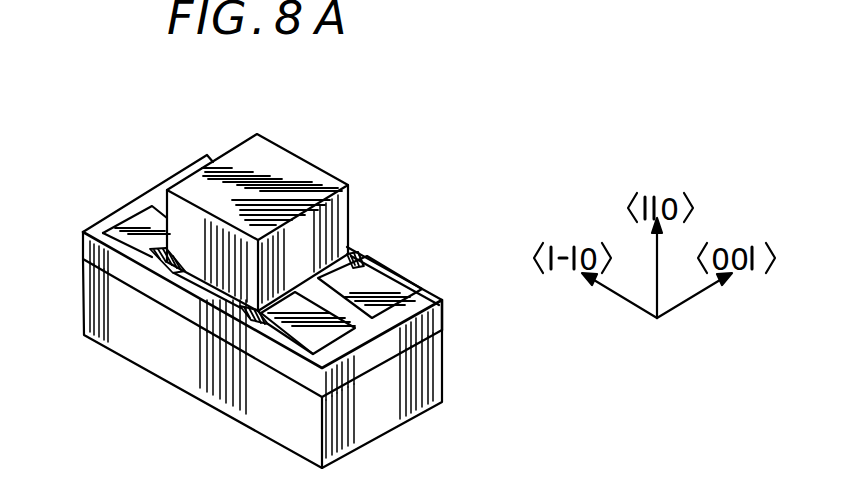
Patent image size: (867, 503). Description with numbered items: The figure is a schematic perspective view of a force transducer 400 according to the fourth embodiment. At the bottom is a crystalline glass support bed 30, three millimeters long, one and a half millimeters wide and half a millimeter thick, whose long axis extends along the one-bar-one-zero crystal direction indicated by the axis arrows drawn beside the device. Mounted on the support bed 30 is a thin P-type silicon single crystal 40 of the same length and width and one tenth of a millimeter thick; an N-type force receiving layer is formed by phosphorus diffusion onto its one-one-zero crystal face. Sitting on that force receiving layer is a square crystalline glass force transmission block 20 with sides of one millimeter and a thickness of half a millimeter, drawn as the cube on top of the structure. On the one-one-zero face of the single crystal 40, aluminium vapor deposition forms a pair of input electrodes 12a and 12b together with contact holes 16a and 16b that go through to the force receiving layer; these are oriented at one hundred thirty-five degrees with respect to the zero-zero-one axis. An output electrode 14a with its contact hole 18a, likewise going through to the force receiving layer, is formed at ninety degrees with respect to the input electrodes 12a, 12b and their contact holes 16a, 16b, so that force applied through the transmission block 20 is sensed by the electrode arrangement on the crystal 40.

The force transducer 400 is at (419, 163).
The crystalline glass support bed 30 is at (395, 402).
The P-type silicon single crystal 40 is at (433, 316).
The crystalline glass force transmission block 20 is at (282, 162).
The input electrode 12a is at (388, 280).
The input electrode 12b is at (150, 222).
The output electrode 14a is at (303, 342).
The contact hole 16a is at (362, 255).
The contact hole 16b is at (177, 270).
The contact hole 18a is at (283, 312).